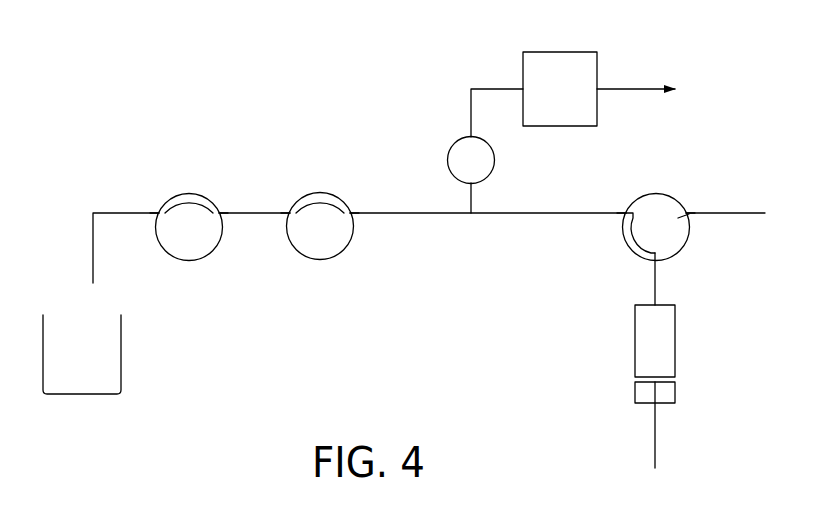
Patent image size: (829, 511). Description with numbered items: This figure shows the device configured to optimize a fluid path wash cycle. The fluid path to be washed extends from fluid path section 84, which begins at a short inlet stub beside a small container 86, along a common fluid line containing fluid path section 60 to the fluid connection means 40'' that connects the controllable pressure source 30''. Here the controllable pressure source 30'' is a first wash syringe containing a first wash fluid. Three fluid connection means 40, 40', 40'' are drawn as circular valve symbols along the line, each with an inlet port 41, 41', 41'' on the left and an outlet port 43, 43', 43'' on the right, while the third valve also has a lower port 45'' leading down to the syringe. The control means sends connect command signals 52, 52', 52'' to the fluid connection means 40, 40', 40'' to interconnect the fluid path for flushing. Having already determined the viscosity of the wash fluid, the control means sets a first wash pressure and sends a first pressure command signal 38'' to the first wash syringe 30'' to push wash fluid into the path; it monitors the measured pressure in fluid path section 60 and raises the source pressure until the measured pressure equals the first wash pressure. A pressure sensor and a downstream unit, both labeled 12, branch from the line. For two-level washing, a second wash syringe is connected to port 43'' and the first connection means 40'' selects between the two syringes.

The detector 12 is at (494, 157).
The controllable pressure source 30'' is at (698, 386).
The first pressure command signal 38'' is at (698, 423).
The fluid connection means 40 is at (207, 238).
The fluid connection means 40' is at (354, 234).
The fluid connection means 40'' is at (686, 224).
The valve inlet port 41 is at (145, 192).
The valve inlet port 41' is at (307, 189).
The valve inlet port 41'' is at (646, 192).
The valve outlet port 43 is at (238, 192).
The valve outlet port 43' is at (371, 190).
The port 43'' is at (708, 193).
The valve port 45'' is at (622, 279).
The connect command signal 52 is at (222, 250).
The connect command signal 52' is at (358, 245).
The connect command signal 52'' is at (689, 227).
The fluid path section 60 is at (527, 213).
The fluid path section 84 is at (93, 243).
The container 86 is at (121, 366).